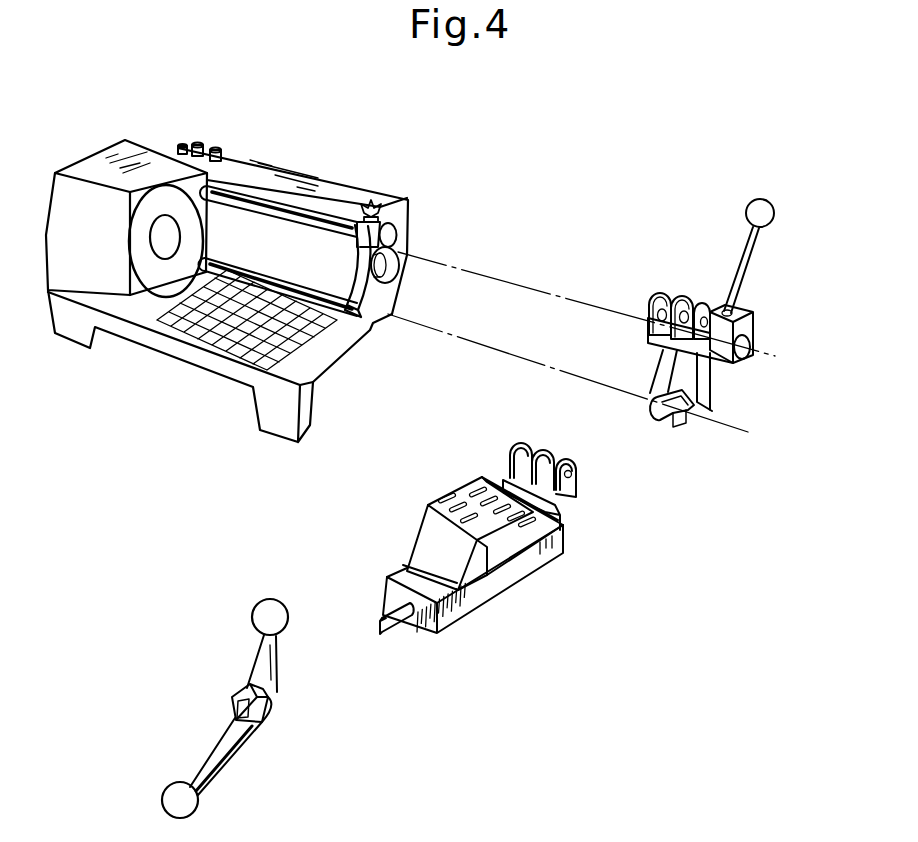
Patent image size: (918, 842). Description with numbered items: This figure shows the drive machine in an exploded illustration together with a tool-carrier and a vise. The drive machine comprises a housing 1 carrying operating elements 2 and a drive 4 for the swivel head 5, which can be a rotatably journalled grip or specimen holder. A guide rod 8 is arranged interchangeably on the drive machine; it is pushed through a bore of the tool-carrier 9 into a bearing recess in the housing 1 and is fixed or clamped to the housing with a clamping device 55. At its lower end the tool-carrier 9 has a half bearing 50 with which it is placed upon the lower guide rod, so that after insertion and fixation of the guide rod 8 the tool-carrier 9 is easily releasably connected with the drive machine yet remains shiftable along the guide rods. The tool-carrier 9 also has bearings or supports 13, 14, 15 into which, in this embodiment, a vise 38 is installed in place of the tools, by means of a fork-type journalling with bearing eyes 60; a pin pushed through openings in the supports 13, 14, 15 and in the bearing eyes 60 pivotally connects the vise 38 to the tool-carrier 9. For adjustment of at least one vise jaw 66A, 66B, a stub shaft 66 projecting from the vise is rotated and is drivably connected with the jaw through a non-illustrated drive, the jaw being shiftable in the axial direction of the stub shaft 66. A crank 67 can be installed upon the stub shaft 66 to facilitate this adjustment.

The housing 1 is at (284, 168).
The operating elements 2 is at (216, 149).
The drive 4 is at (121, 137).
The swivel head 5 is at (147, 283).
The guide rod 8 is at (308, 220).
The clamping device 55 is at (375, 205).
The bearing 13 is at (653, 296).
The bearing 14 is at (681, 292).
The bearing 15 is at (707, 300).
The tool-carrier 9 is at (746, 318).
The half bearing 50 is at (688, 424).
The bearing eyes 60 is at (576, 488).
The vise jaw 66B is at (565, 530).
The vise 38 is at (523, 567).
The vise jaw 66A is at (478, 575).
The stub shaft 66 is at (398, 623).
The crank 67 is at (262, 727).